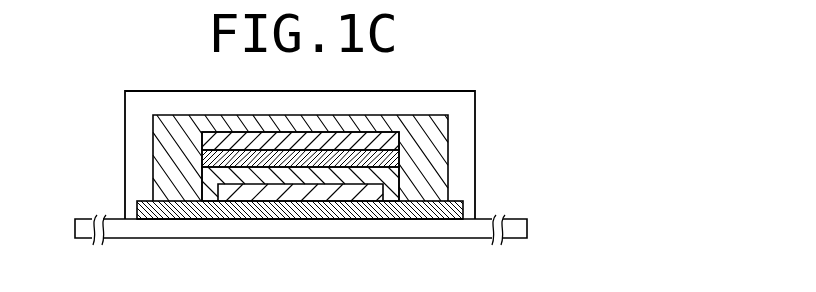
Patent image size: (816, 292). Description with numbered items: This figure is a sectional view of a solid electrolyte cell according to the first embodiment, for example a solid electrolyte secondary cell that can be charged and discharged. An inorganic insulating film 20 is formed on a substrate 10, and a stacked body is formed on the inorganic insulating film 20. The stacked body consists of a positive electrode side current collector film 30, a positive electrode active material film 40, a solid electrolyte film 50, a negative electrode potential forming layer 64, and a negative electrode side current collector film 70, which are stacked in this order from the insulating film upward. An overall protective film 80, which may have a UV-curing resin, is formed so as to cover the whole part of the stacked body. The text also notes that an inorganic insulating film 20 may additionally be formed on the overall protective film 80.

The substrate 10 is at (390, 228).
The inorganic insulating film 20 is at (427, 215).
The positive electrode side current collector film 30 is at (455, 196).
The positive electrode active material film 40 is at (405, 178).
The solid electrolyte film 50 is at (388, 160).
The negative electrode potential forming layer 64 is at (383, 142).
The negative electrode side current collector film 70 is at (432, 123).
The overall protective film 80 is at (458, 103).